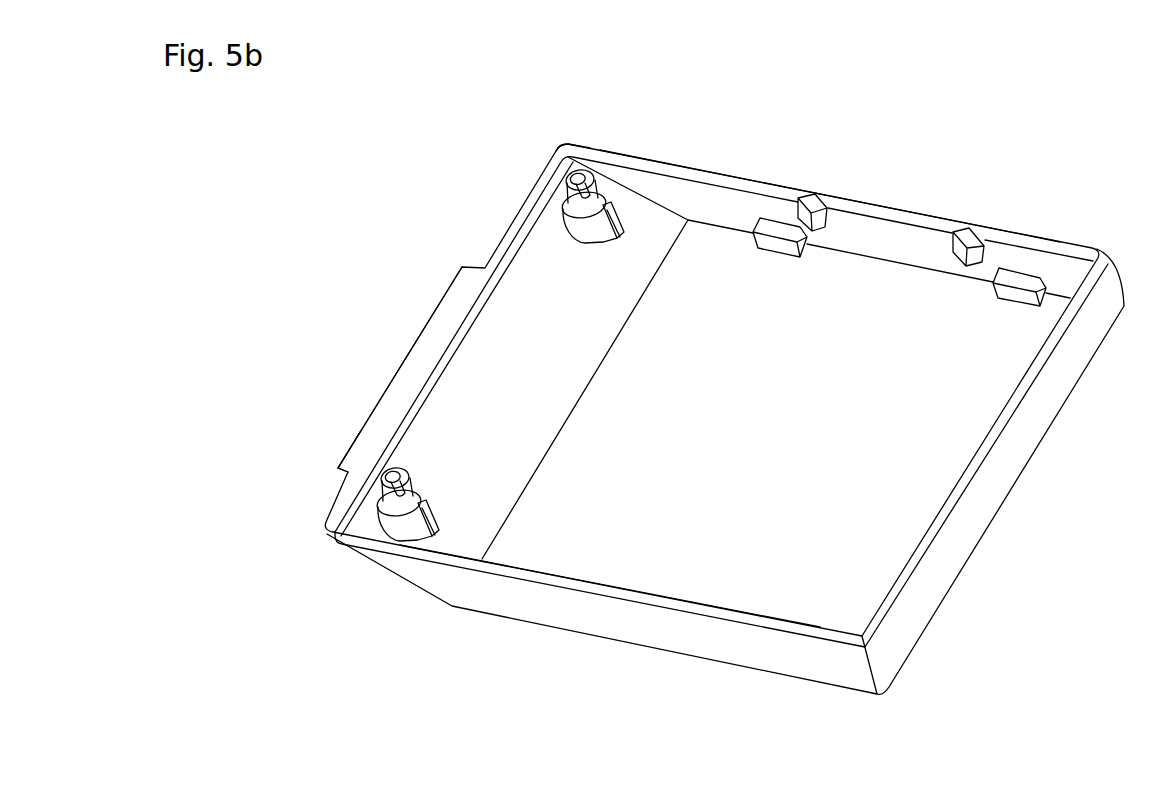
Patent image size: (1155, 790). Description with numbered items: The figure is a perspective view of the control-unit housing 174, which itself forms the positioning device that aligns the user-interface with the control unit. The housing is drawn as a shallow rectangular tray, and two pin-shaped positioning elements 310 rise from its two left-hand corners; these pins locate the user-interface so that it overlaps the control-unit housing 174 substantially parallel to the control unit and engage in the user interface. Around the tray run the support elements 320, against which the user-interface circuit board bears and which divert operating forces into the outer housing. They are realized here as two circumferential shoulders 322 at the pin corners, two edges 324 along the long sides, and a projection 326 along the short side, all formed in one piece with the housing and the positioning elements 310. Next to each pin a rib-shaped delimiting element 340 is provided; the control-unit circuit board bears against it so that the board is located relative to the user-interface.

The control-unit housing 174 is at (1003, 456).
The positioning element 310 is at (560, 171).
The support element 320 is at (653, 400).
The circumferential shoulder 322 is at (548, 225).
The edge 324 is at (732, 175).
The projection 326 is at (450, 308).
The delimiting element 340 is at (547, 224).